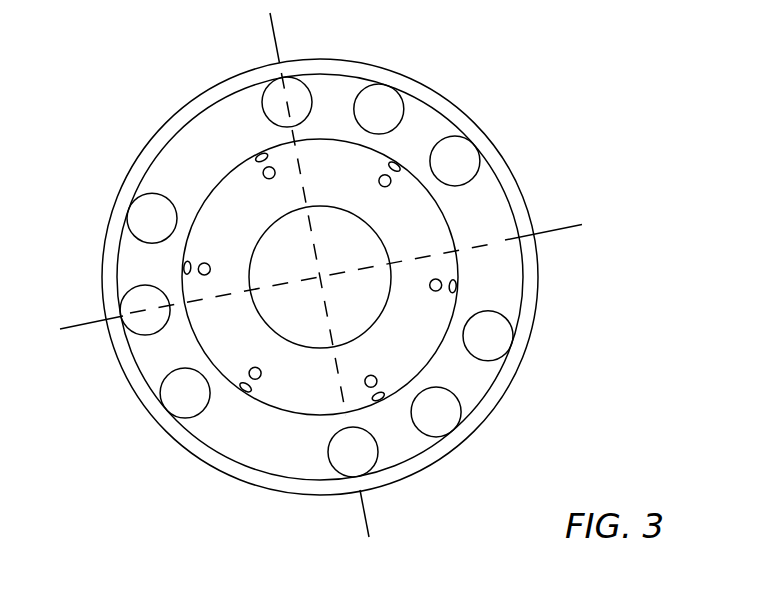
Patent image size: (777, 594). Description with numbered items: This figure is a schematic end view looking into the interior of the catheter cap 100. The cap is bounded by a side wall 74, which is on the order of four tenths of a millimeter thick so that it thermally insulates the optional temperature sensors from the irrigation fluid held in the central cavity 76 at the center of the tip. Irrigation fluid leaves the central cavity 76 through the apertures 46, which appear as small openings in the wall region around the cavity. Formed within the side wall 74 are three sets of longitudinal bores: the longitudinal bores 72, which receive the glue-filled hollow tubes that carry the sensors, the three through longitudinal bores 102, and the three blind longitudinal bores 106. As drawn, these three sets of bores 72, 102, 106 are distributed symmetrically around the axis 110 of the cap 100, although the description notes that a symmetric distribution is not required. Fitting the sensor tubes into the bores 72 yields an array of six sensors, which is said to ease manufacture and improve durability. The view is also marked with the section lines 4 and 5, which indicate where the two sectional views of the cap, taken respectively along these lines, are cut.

The catheter cap 100 is at (516, 170).
The side wall 74 is at (505, 297).
The central cavity 76 is at (369, 306).
The axis 110 is at (319, 276).
The longitudinal bores 72 is at (274, 112).
The blind longitudinal bores 106 is at (361, 119).
The through longitudinal bores 102 is at (437, 171).
The apertures 46 is at (199, 262).
The section line 4- 4 is at (262, 26).
The section line 5- 5 is at (82, 335).